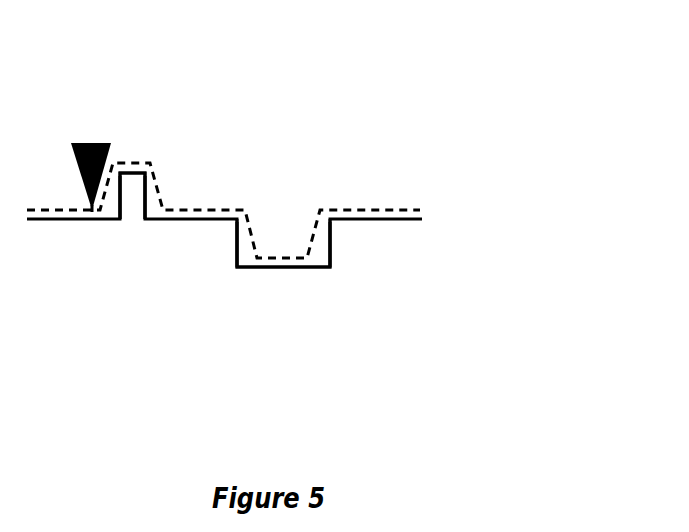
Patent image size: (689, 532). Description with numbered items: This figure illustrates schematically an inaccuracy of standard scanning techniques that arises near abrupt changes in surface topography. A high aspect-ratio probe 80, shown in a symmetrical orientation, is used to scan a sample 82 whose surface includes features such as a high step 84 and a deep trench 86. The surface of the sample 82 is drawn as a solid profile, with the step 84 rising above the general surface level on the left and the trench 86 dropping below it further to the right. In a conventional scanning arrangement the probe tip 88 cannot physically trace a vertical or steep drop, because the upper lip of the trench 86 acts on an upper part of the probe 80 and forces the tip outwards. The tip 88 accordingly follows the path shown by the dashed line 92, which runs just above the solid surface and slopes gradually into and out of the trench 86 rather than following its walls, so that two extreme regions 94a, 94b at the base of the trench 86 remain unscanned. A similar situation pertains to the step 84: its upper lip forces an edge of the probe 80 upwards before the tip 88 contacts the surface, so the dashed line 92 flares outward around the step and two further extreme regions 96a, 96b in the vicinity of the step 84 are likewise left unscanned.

The high aspect-ratio probe 80 is at (95, 143).
The sample 82 is at (450, 224).
The high step 84 is at (145, 187).
The deep trench 86 is at (330, 242).
The probe tip 88 is at (92, 212).
The dashed line 92 is at (429, 200).
The extreme region 94a is at (233, 271).
The extreme region 94b is at (320, 269).
The extreme region 96a is at (125, 232).
The extreme region 96b is at (150, 228).